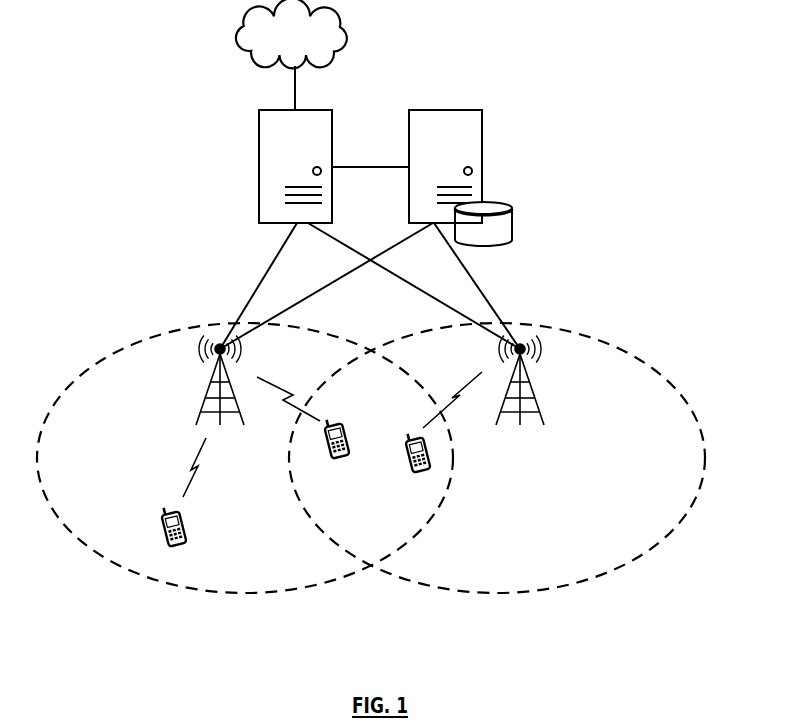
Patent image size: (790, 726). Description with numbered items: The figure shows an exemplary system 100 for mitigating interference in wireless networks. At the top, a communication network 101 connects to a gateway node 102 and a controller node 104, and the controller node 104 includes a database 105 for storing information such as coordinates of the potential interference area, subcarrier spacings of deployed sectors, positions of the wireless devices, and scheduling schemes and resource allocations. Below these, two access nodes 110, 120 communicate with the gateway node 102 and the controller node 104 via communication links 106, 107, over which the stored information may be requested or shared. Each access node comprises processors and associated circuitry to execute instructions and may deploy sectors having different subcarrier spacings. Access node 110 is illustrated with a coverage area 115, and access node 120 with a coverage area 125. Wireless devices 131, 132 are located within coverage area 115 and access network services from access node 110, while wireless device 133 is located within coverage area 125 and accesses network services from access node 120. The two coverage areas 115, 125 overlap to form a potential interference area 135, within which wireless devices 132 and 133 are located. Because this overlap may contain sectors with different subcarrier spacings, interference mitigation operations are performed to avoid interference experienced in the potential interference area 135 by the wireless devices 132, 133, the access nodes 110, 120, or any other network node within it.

The system 100 is at (447, 48).
The communication network 101 is at (311, 44).
The gateway node 102 is at (259, 138).
The controller node 104 is at (482, 151).
The database 105 is at (512, 224).
The communication link 106 is at (352, 250).
The communication link 107 is at (322, 288).
The access node 110 is at (206, 401).
The access node 120 is at (538, 405).
The coverage area 115 is at (238, 594).
The coverage area 125 is at (491, 594).
The wireless device 131 is at (178, 546).
The wireless device 132 is at (333, 456).
The wireless device 133 is at (422, 474).
The potential interference area 135 is at (370, 529).